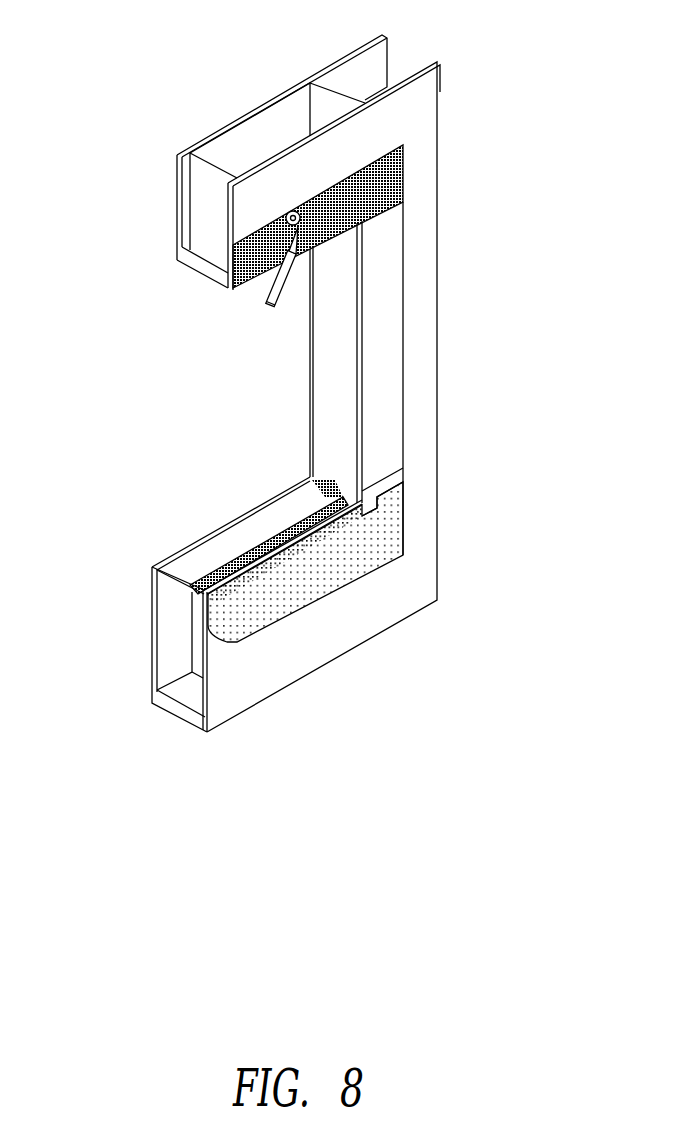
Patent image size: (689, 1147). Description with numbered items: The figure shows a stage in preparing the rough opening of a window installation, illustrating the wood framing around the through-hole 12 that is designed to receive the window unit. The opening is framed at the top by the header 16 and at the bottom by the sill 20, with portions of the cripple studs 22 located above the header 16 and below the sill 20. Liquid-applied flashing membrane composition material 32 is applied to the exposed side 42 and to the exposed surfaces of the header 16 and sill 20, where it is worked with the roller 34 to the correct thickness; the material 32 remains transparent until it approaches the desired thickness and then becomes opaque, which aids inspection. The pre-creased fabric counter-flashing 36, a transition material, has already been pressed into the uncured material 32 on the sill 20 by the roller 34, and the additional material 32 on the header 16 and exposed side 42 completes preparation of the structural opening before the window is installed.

The through-hole 12 is at (178, 418).
The header 16 is at (186, 269).
The sill 20 is at (186, 593).
The cripple studs 22 is at (323, 101).
The composition material 32 is at (405, 180).
The roller 34 is at (264, 313).
The fabric counter-flashing 36 is at (336, 583).
The exposed side 42 is at (334, 364).